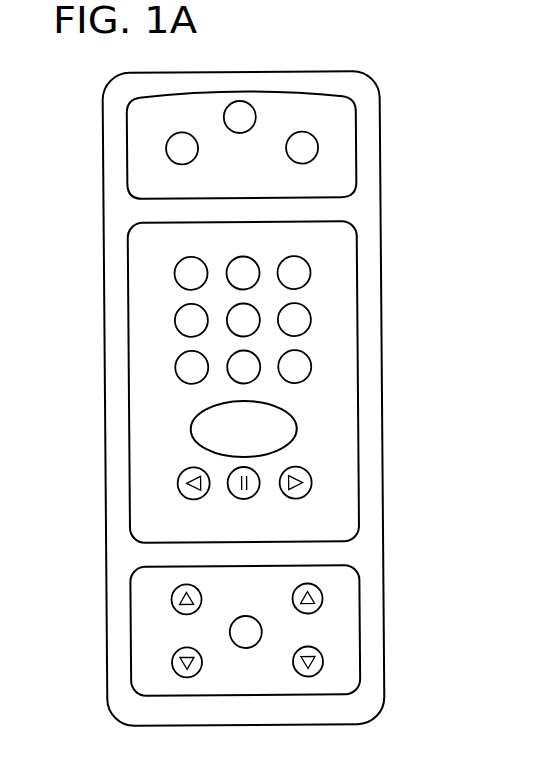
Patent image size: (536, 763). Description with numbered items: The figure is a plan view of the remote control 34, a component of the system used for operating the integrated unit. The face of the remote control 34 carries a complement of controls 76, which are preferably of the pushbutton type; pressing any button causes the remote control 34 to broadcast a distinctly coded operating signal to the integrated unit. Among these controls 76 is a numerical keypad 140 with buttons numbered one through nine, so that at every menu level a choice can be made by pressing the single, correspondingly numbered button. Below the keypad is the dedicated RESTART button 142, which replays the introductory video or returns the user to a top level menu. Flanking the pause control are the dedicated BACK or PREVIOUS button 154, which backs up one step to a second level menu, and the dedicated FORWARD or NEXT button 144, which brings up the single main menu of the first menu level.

The remote control 34 is at (404, 526).
The controls 76 is at (154, 178).
The numerical keypad 140 is at (370, 459).
The RESTART button 142 is at (188, 431).
The FORWARD (FWD) or NEXT button 144 is at (311, 485).
The BACK or PREVIOUS button 154 is at (176, 482).